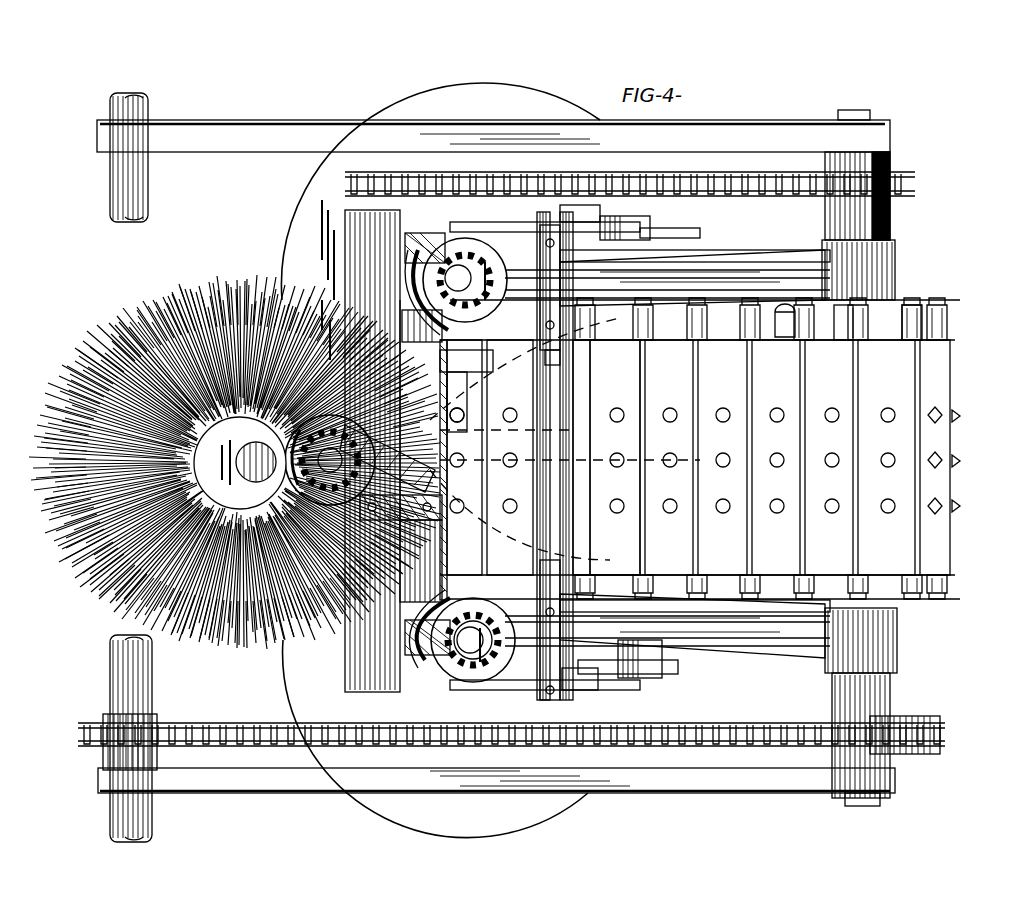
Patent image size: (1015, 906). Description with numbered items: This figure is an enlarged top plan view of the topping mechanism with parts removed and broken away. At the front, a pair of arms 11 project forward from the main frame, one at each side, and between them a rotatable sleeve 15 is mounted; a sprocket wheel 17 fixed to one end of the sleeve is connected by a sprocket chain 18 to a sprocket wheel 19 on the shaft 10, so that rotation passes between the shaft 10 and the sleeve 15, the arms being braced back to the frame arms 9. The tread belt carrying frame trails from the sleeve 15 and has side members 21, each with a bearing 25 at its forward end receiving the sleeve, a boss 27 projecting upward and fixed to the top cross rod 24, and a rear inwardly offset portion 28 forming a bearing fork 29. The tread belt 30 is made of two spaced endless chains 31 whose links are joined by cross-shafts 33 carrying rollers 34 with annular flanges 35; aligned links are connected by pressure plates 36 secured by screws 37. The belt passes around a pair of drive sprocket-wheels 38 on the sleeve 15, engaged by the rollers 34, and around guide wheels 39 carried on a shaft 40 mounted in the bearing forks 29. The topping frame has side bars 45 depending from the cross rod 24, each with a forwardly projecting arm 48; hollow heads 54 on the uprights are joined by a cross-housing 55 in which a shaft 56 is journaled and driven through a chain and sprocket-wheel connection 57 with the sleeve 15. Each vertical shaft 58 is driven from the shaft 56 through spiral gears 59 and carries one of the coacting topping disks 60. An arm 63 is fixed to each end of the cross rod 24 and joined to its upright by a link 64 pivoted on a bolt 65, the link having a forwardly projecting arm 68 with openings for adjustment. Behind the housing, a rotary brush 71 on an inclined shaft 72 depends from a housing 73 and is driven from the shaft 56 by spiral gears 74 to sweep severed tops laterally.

The frame arm 9 is at (503, 448).
The shaft 10 is at (149, 190).
The arm 11 is at (296, 122).
The rotatable sleeve 15 is at (892, 222).
The sprocket wheel 17 is at (893, 730).
The sprocket chain 18 is at (245, 735).
The sprocket wheel 19 is at (112, 735).
The side member 21 is at (722, 290).
The top cross rod 24 is at (575, 398).
The bearing 25 is at (897, 262).
The boss 27 is at (543, 345).
The inwardly offset portion 28 is at (540, 362).
The bearing fork 29 is at (442, 362).
The tread belt 30 is at (714, 433).
The endless chain 31 is at (952, 340).
The cross-shaft 33 is at (918, 300).
The roller 34 is at (845, 340).
The annular flange 35 is at (905, 340).
The pressure plate 36 is at (777, 453).
The screw 37 is at (777, 408).
The drive sprocket-wheel 38 is at (940, 312).
The guide wheel 39 is at (421, 335).
The shaft 40 is at (465, 415).
The side bar 45 is at (540, 272).
The arm 48 is at (635, 265).
The hollow head 54 is at (465, 660).
The cross-housing 55 is at (372, 632).
The shaft 56 is at (402, 556).
The chain and sprocket-wheel connection 57 is at (627, 185).
The vertical shaft 58 is at (461, 272).
The spiral gears 59 is at (420, 286).
The topping disk 60 is at (520, 95).
The arm 63 is at (612, 232).
The link 64 is at (515, 225).
The bolt 65 is at (580, 690).
The forwardly projecting arm 68 is at (655, 230).
The rotary brush 71 is at (226, 640).
The shaft 72 is at (250, 482).
The housing 73 is at (318, 458).
The spiral gears 74 is at (378, 440).